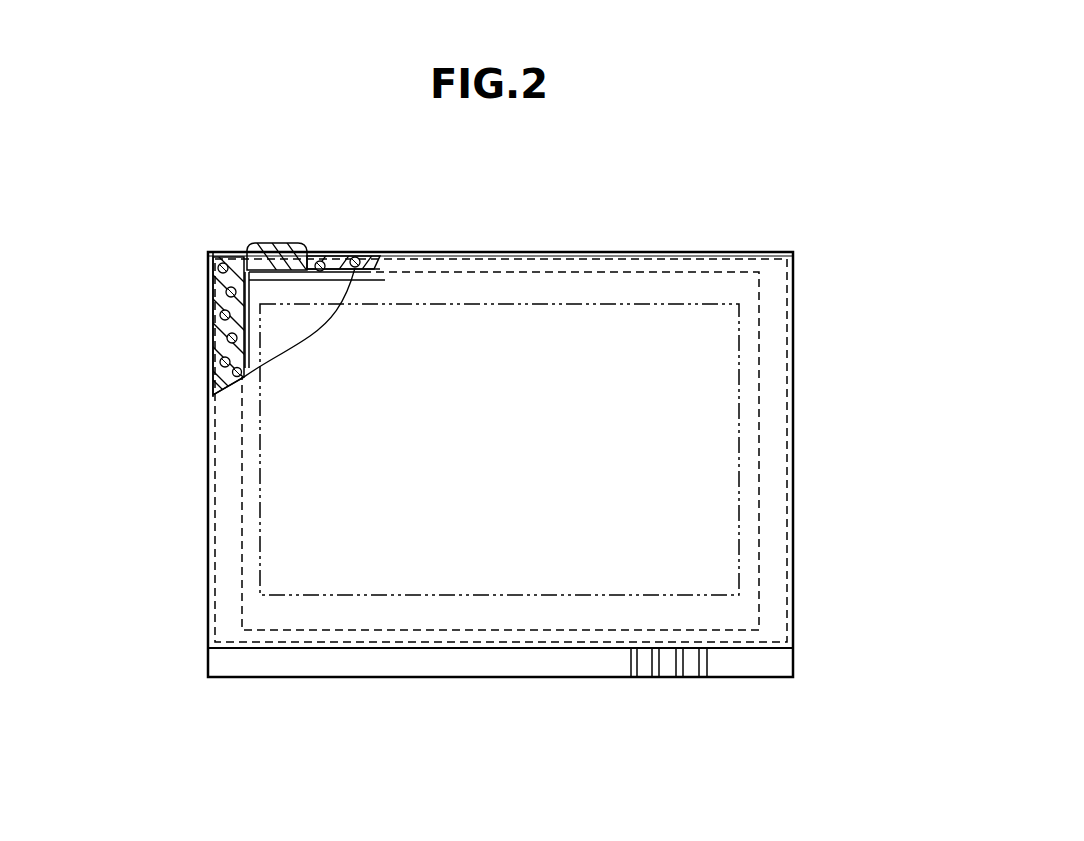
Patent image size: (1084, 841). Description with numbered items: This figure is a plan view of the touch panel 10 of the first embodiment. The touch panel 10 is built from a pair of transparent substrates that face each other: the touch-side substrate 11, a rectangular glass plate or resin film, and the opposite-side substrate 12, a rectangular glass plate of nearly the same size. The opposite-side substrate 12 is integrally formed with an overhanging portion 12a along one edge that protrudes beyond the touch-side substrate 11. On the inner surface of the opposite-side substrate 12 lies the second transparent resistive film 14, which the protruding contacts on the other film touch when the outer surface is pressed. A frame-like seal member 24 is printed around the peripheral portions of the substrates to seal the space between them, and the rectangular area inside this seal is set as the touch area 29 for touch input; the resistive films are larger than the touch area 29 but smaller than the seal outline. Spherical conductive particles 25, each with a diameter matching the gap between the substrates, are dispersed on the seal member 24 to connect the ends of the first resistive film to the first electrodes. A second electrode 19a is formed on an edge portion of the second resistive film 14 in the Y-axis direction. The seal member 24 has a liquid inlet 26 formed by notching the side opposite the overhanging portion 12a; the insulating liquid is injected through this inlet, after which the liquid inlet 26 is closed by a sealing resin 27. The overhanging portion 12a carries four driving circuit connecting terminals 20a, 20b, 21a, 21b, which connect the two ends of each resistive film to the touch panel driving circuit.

The touch panel 10 is at (778, 226).
The touch-side substrate 11 is at (570, 285).
The opposite-side substrate 12 is at (208, 267).
The overhanging portion 12a is at (415, 665).
The second transparent resistive film 14 is at (273, 343).
The second electrode 19a is at (320, 276).
The driving circuit connecting terminal 20a is at (633, 663).
The driving circuit connecting terminal 20b is at (680, 663).
The driving circuit connecting terminal 21a is at (703, 663).
The driving circuit connecting terminal 21b is at (655, 663).
The frame-like seal member 24 is at (220, 333).
The spherical conductive particles 25 is at (222, 363).
The liquid inlet 26 is at (297, 288).
The sealing resin 27 is at (276, 246).
The touch area 29 is at (726, 432).